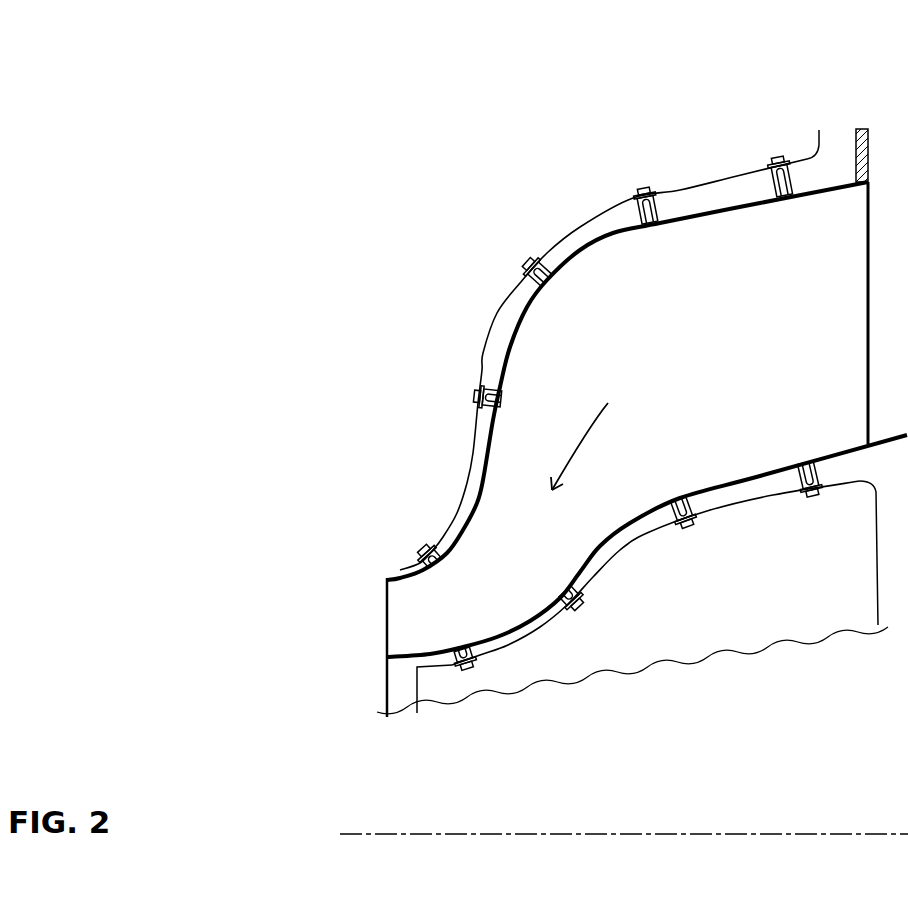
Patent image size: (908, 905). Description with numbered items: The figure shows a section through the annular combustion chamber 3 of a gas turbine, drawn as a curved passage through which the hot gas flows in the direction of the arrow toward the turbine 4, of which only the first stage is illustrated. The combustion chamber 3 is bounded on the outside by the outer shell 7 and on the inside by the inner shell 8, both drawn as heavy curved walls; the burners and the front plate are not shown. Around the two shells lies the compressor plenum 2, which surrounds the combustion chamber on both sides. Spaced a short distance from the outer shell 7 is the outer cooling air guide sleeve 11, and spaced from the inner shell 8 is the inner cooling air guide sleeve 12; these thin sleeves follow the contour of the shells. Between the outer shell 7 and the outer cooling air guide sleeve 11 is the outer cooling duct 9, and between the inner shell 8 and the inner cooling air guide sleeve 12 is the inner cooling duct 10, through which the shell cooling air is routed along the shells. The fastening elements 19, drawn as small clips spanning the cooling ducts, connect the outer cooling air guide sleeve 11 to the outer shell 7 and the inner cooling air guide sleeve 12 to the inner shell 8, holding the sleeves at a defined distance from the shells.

The compressor plenum 2 is at (449, 248).
The annular combustion chamber 3 is at (715, 357).
The turbine 4 is at (360, 625).
The outer shell 7 is at (576, 244).
The inner shell 8 is at (633, 524).
The outer cooling duct 9 is at (736, 188).
The inner cooling duct 10 is at (745, 627).
The outer cooling air guide sleeve 11 is at (496, 312).
The inner cooling air guide sleeve 12 is at (508, 646).
The fastening elements 19 is at (651, 184).